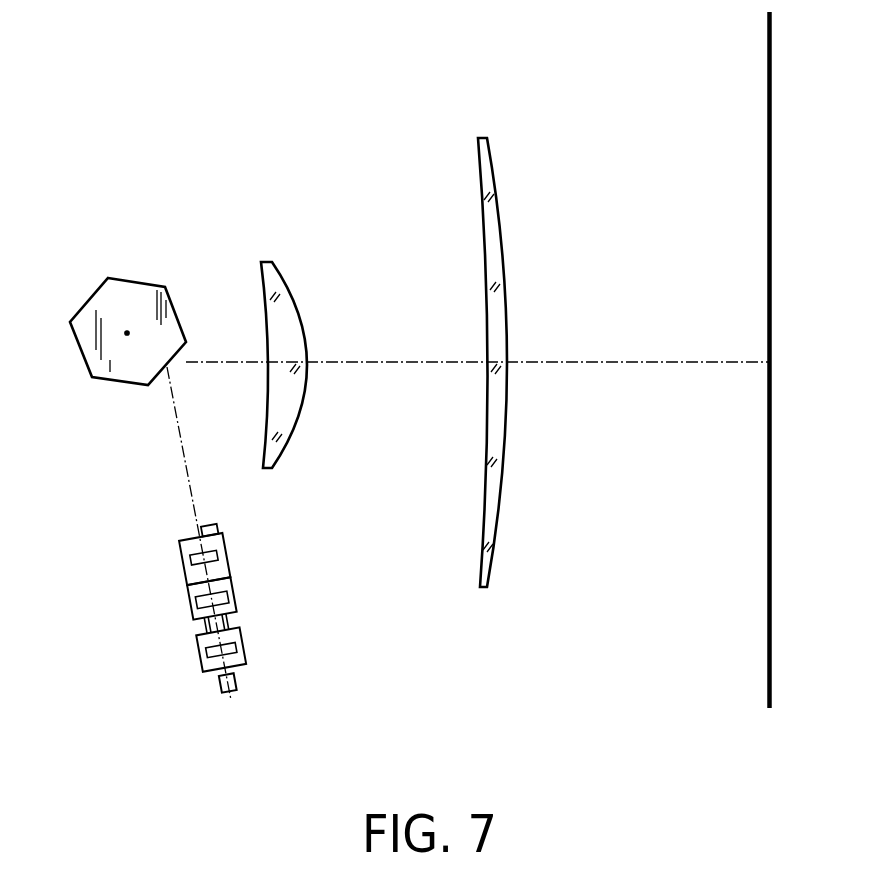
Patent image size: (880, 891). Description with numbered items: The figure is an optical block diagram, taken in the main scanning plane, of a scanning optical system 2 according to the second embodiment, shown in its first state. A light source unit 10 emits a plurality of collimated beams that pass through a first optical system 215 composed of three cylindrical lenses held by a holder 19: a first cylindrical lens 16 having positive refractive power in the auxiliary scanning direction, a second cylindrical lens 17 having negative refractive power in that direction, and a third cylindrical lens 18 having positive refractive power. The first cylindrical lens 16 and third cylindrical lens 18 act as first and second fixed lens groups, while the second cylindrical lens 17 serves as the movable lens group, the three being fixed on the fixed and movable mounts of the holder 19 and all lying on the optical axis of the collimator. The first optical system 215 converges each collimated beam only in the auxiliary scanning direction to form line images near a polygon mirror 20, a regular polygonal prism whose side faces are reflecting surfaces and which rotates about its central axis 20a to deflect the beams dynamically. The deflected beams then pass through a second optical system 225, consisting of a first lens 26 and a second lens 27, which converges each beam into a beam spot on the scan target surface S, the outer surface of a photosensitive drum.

The scanning optical system 2 is at (82, 117).
The light source unit 10 is at (237, 683).
The first cylindrical lens 16 is at (241, 641).
The second cylindrical lens 17 is at (229, 598).
The third cylindrical lens 18 is at (223, 551).
The holder 19 is at (168, 604).
The polygon mirror 20 is at (130, 278).
The central axis 20a is at (127, 333).
The first lens 26 is at (273, 262).
The second lens 27 is at (487, 139).
The first optical system 215 is at (317, 512).
The second optical system 225 is at (533, 63).
The scan target surface S is at (768, 562).